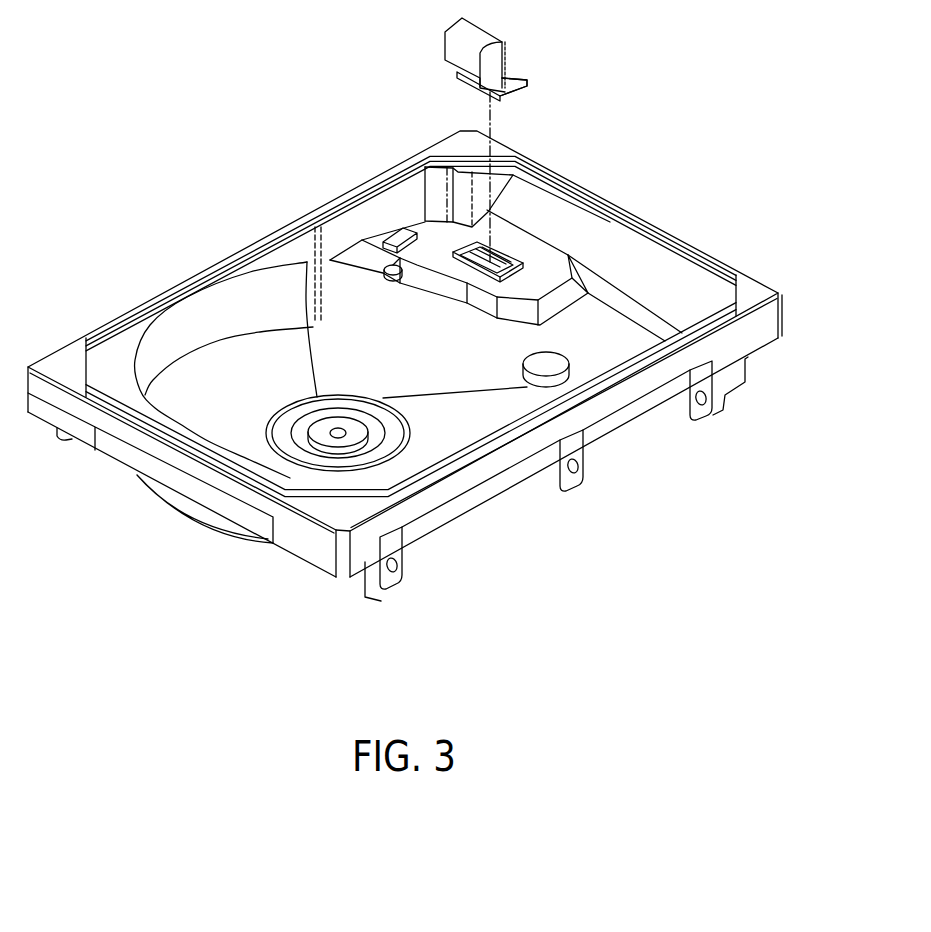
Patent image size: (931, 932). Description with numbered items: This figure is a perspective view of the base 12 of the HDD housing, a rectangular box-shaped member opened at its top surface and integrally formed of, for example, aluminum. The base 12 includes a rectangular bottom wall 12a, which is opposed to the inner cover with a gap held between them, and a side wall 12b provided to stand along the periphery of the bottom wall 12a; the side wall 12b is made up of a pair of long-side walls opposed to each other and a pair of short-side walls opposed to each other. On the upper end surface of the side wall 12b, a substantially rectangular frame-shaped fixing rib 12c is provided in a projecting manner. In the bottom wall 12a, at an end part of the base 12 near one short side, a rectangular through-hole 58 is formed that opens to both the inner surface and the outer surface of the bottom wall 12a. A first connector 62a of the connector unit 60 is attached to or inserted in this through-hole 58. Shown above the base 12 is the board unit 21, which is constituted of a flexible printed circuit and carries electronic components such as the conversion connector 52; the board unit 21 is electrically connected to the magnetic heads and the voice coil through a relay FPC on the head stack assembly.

The base 12 is at (697, 230).
The bottom wall 12a is at (238, 367).
The side wall 12b is at (297, 542).
The fixing rib 12c is at (102, 322).
The board unit 21 is at (445, 52).
The conversion connector 52 is at (520, 88).
The through-hole 58 is at (458, 258).
The connector unit 60 is at (460, 240).
The first connector 62a is at (498, 262).